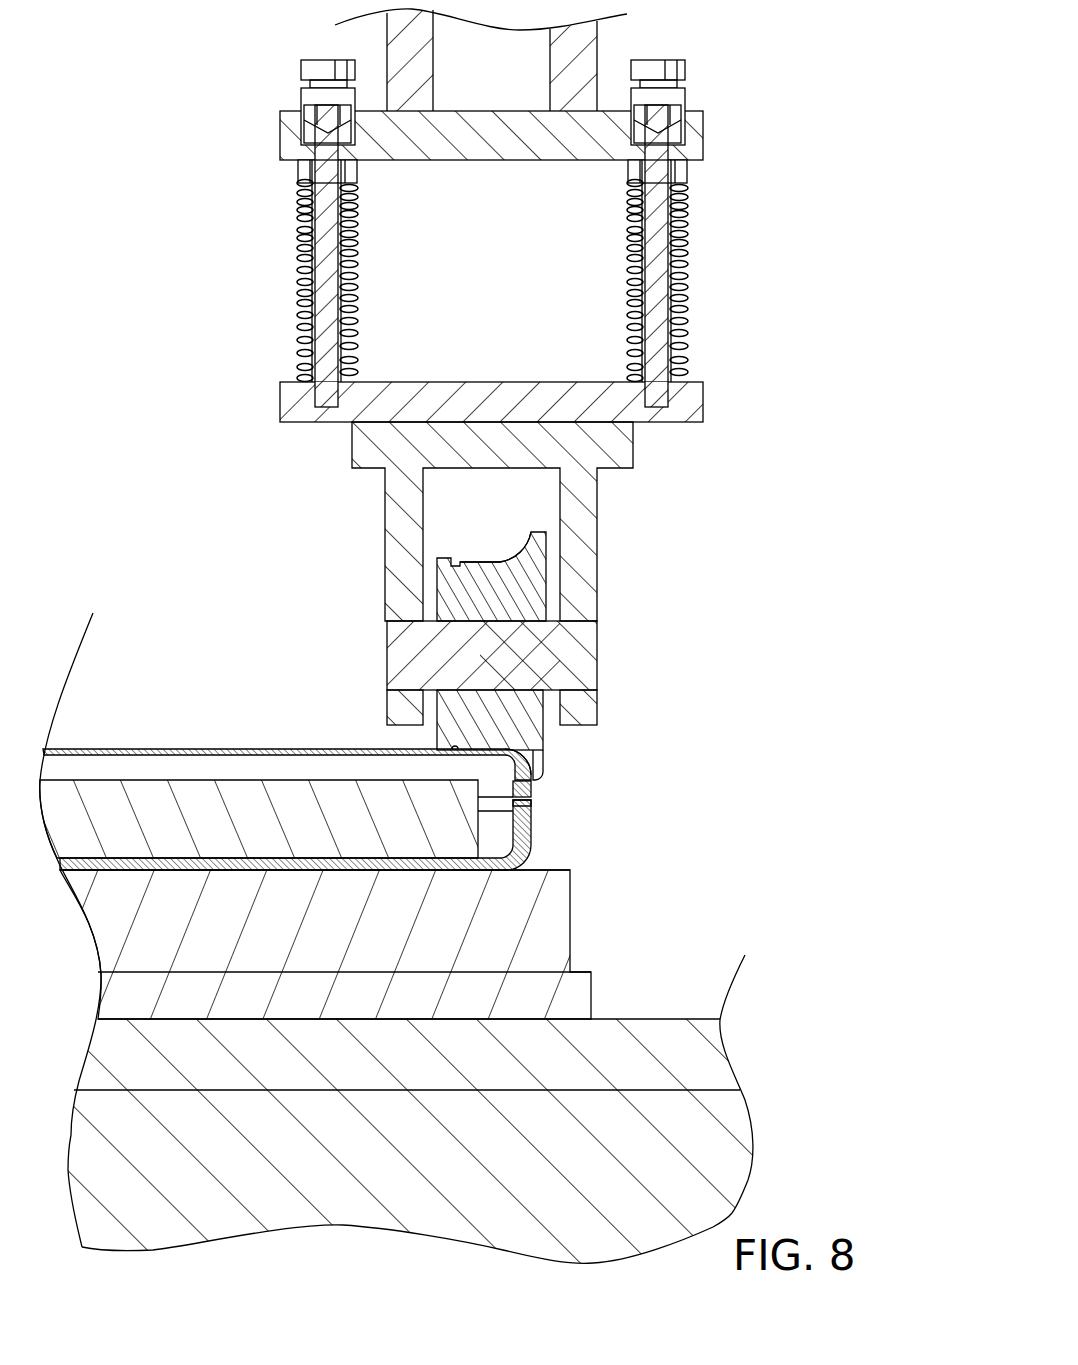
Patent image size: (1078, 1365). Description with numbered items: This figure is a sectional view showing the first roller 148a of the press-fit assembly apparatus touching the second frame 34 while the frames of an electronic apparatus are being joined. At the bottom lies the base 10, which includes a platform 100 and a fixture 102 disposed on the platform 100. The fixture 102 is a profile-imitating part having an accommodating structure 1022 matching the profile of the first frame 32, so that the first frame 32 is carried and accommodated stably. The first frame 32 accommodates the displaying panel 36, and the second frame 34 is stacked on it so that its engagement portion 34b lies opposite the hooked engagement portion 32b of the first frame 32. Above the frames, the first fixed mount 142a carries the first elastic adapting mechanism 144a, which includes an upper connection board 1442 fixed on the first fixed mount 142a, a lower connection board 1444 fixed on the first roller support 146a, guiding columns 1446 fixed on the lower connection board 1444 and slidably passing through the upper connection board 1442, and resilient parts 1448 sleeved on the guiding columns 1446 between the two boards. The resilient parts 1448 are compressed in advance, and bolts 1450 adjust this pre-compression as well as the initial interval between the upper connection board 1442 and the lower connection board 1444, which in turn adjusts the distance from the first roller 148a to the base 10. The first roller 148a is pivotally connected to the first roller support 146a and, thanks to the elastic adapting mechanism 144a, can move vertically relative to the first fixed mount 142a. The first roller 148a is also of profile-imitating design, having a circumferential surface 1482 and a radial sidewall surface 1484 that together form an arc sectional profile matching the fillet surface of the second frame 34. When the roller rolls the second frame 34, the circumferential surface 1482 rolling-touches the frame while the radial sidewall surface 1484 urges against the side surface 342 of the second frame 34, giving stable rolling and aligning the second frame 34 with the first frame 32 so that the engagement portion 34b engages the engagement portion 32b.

The first fixed mount 142a is at (594, 46).
The first elastic adapting mechanism 144a is at (561, 241).
The upper connection board 1442 is at (690, 138).
The lower connection board 1444 is at (688, 397).
The guiding columns 1446 is at (778, 402).
The resilient parts 1448 is at (683, 312).
The bolts 1450 is at (653, 318).
The first roller support 146a is at (583, 510).
The first roller 148a is at (520, 598).
The circumferential surface 1482 is at (474, 552).
The radial sidewall surface 1484 is at (517, 545).
The displaying panel 36 is at (248, 797).
The second frame 34 is at (531, 754).
The side surface 342 is at (541, 773).
The engagement portion 34b is at (535, 790).
The first frame 32 is at (528, 837).
The engagement portion 32b is at (530, 806).
The accommodating structure 1022 is at (526, 869).
The fixture 102 is at (553, 910).
The platform 100 is at (628, 1040).
The base 10 is at (406, 1055).